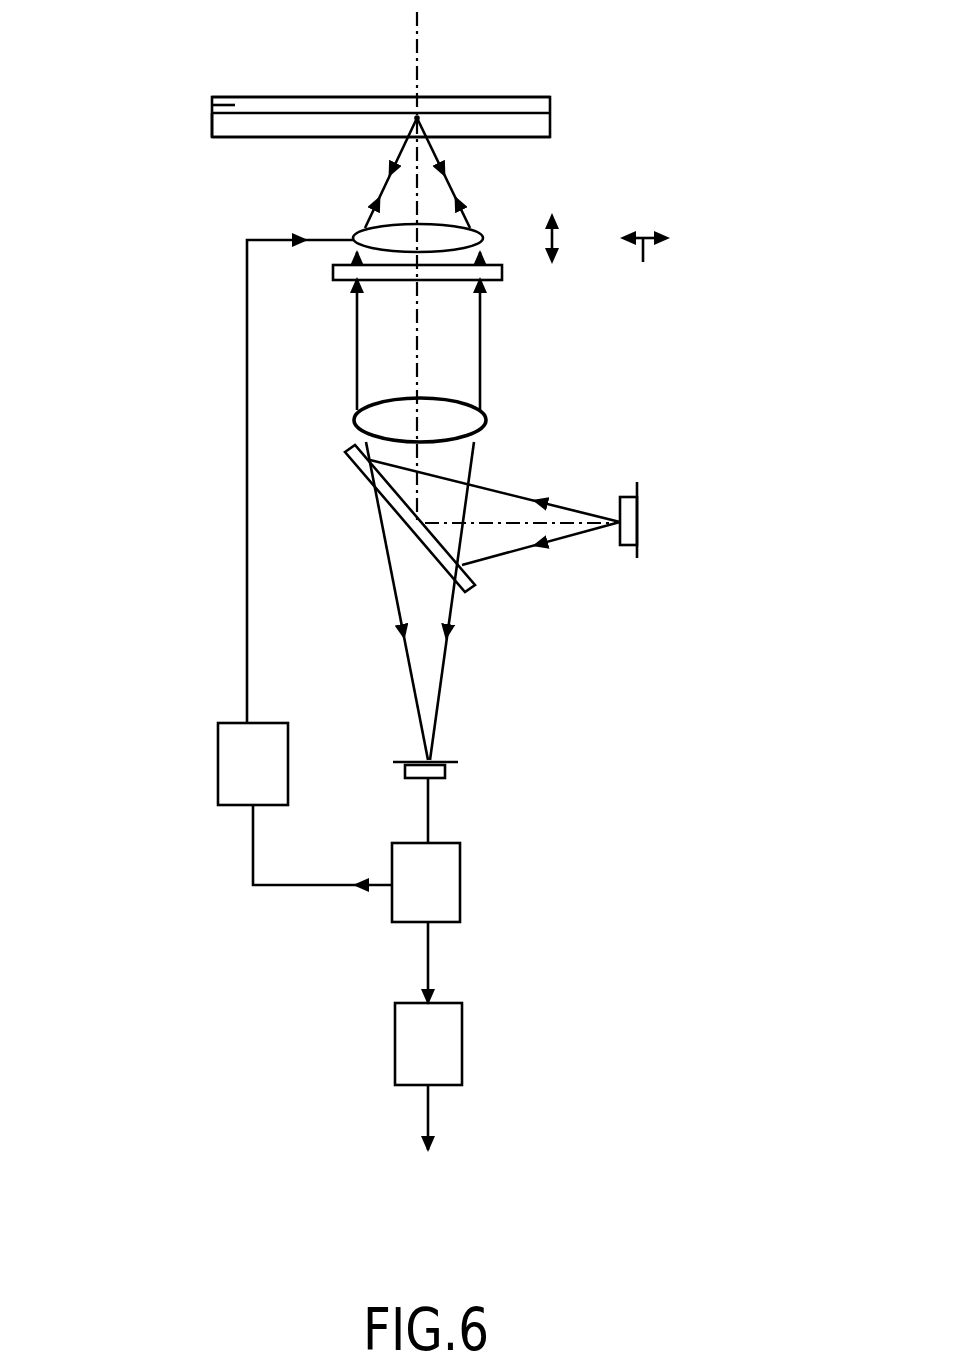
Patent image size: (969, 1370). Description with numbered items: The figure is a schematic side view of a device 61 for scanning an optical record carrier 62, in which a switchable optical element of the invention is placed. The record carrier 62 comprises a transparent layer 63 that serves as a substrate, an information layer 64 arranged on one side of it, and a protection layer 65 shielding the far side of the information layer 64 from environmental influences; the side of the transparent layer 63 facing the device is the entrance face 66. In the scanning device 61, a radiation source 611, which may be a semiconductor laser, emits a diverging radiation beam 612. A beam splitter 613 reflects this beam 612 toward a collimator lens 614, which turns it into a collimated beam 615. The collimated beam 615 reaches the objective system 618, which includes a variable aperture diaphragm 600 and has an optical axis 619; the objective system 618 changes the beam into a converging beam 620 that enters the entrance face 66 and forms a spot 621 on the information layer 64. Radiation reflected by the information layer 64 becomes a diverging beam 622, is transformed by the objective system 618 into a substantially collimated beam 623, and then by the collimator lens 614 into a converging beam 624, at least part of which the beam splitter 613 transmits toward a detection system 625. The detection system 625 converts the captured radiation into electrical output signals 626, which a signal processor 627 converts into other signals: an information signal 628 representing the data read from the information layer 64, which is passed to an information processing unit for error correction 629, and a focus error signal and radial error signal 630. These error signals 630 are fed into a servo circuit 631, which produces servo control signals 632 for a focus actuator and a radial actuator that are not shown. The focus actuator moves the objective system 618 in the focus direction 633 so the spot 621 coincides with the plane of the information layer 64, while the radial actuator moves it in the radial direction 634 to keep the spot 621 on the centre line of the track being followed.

The device for scanning an optical record carrier 61 is at (180, 482).
The optical record carrier 62 is at (172, 45).
The transparent layer 63 is at (218, 129).
The information layer 64 is at (240, 97).
The protection layer 65 is at (224, 106).
The entrance face 66 is at (243, 142).
The variable aperture diaphragm 600 is at (383, 270).
The radiation source 611 is at (639, 533).
The radiation beam 612 is at (555, 501).
The beam splitter 613 is at (347, 462).
The collimator lens 614 is at (357, 420).
The collimated beam 615 is at (356, 363).
The objective system 618 is at (356, 232).
The optical axis 619 is at (420, 38).
The converging beam 620 is at (394, 160).
The spot 621 is at (417, 118).
The diverging beam 622 is at (455, 206).
The substantially collimated beam 623 is at (482, 290).
The converging beam 624 is at (478, 452).
The detection system 625 is at (447, 771).
The electrical output signals 626 is at (428, 815).
The signal processor 627 is at (460, 885).
The information signal 628 is at (428, 955).
The information processing unit for error correction 629 is at (462, 1043).
The focus error signal and radial error signal 630 is at (300, 888).
The servo circuit 631 is at (218, 765).
The servo control signals 632 is at (247, 535).
The focus direction 633 is at (556, 238).
The radial direction 634 is at (652, 273).